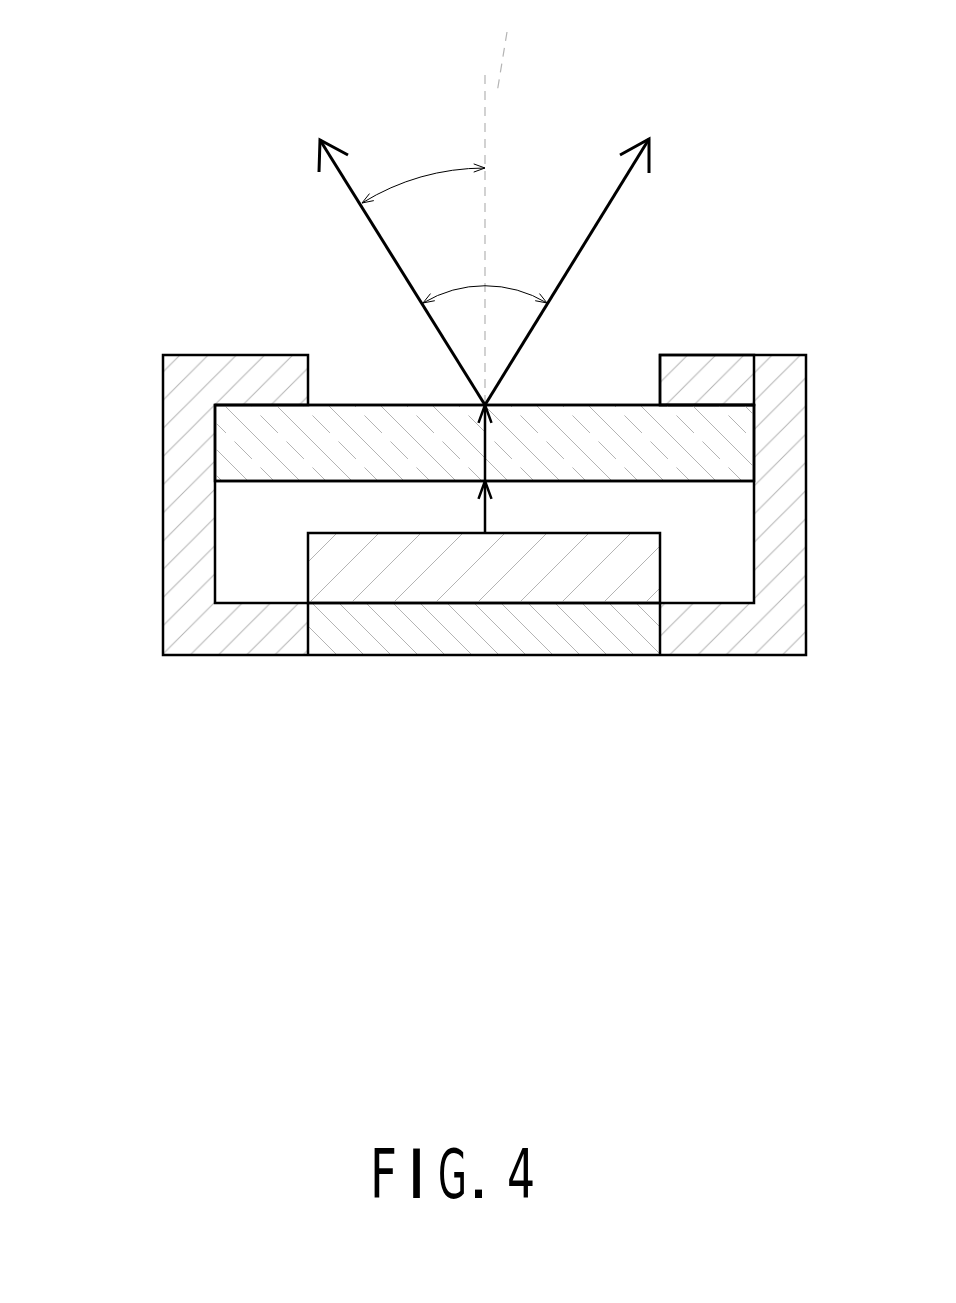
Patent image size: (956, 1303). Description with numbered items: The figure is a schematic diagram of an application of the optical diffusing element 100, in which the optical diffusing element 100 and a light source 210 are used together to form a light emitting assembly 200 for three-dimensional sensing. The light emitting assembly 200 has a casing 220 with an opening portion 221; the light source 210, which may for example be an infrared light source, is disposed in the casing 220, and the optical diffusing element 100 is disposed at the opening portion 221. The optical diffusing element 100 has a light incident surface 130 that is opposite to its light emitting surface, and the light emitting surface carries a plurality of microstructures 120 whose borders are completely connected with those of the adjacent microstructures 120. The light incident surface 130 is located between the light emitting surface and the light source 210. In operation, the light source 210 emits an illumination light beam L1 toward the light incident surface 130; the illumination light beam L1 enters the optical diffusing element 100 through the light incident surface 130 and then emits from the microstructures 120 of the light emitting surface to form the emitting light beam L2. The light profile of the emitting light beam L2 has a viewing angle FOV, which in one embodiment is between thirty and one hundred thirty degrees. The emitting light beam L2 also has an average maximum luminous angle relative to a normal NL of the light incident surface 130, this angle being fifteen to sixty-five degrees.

The light emitting assembly 200 is at (121, 75).
The casing 220 is at (717, 632).
The opening portion 221 is at (660, 377).
The light source 210 is at (515, 577).
The optical diffusing element 100 is at (413, 430).
The microstructures 120 is at (363, 405).
The light incident surface 130 is at (253, 482).
The normal of the light incident surface NL is at (505, 204).
The illumination light beam L1 is at (485, 507).
The emitting light beam L2 is at (345, 183).
The viewing angle of the light profile FOV is at (485, 278).